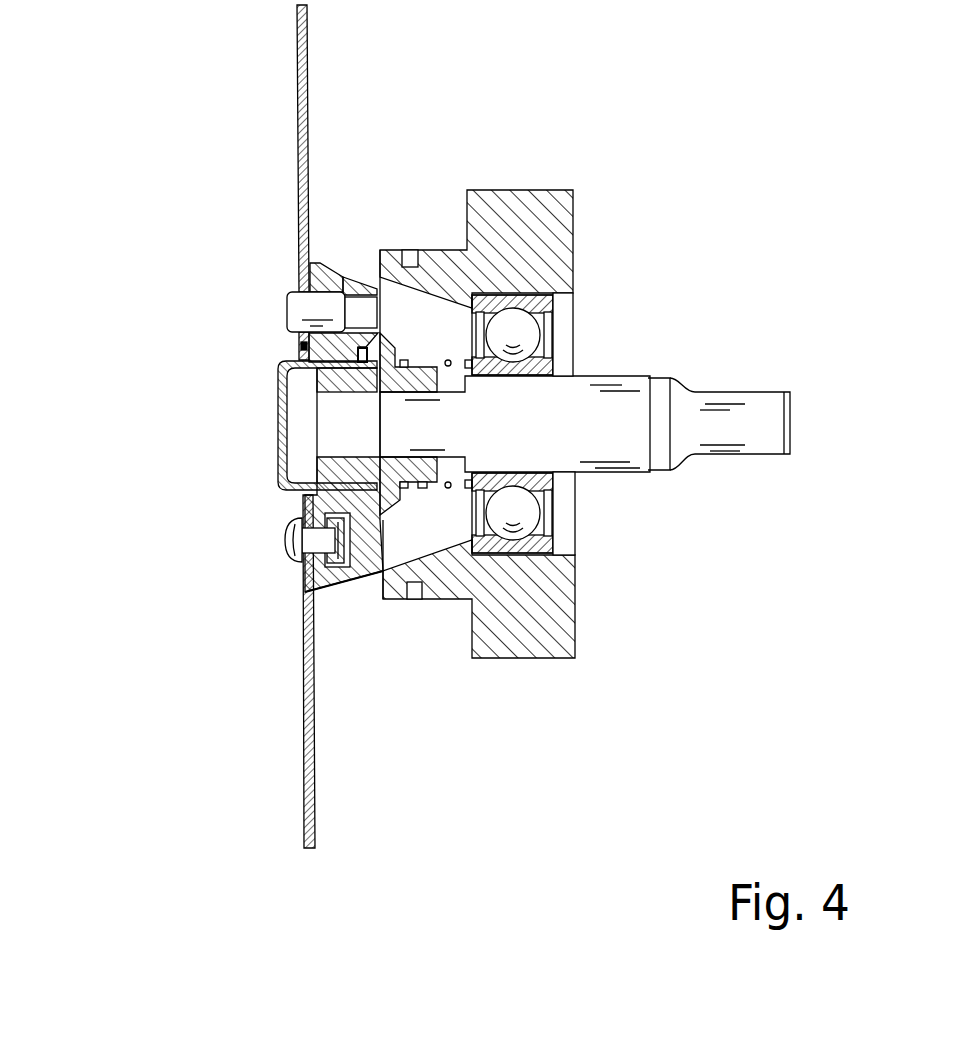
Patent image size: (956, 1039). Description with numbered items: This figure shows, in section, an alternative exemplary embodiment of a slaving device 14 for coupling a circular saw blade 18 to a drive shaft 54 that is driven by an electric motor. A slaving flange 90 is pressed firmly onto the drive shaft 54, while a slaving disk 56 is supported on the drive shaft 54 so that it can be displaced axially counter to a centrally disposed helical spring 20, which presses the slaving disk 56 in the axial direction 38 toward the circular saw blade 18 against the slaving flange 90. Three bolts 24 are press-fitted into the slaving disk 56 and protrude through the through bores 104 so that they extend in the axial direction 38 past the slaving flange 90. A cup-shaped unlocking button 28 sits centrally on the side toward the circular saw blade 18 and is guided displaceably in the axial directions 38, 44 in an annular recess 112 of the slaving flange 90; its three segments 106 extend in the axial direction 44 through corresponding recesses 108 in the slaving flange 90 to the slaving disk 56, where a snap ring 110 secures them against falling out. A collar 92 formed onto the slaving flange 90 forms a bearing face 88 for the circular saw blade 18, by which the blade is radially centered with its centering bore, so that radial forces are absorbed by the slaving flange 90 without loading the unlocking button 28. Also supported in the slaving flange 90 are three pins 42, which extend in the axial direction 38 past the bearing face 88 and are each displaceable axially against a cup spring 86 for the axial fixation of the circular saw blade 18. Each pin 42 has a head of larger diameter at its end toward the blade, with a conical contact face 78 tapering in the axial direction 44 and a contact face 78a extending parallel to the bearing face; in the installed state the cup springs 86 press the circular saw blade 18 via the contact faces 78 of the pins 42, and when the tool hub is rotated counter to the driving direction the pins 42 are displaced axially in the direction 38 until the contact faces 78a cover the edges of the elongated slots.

The slaving device 14 is at (337, 596).
The circular saw blade 18 is at (272, 95).
The helical spring 20 is at (461, 545).
The bolt 24 is at (307, 309).
The unlocking button 28 is at (278, 453).
The axial direction 38 is at (428, 425).
The pin 42 is at (290, 547).
The axial direction 44 is at (560, 425).
The drive shaft 54 is at (625, 448).
The slaving disk 56 is at (389, 599).
The conical contact face 78 is at (296, 561).
The contact face 78a is at (310, 606).
The cup spring 86 is at (348, 580).
The bearing face 88 is at (320, 267).
The slaving flange 90 is at (335, 272).
The collar 92 is at (295, 354).
The through bore 104 is at (299, 340).
The segment 106 is at (317, 385).
The recess 108 is at (380, 385).
The snap ring 110 is at (380, 332).
The annular recess 112 is at (303, 504).